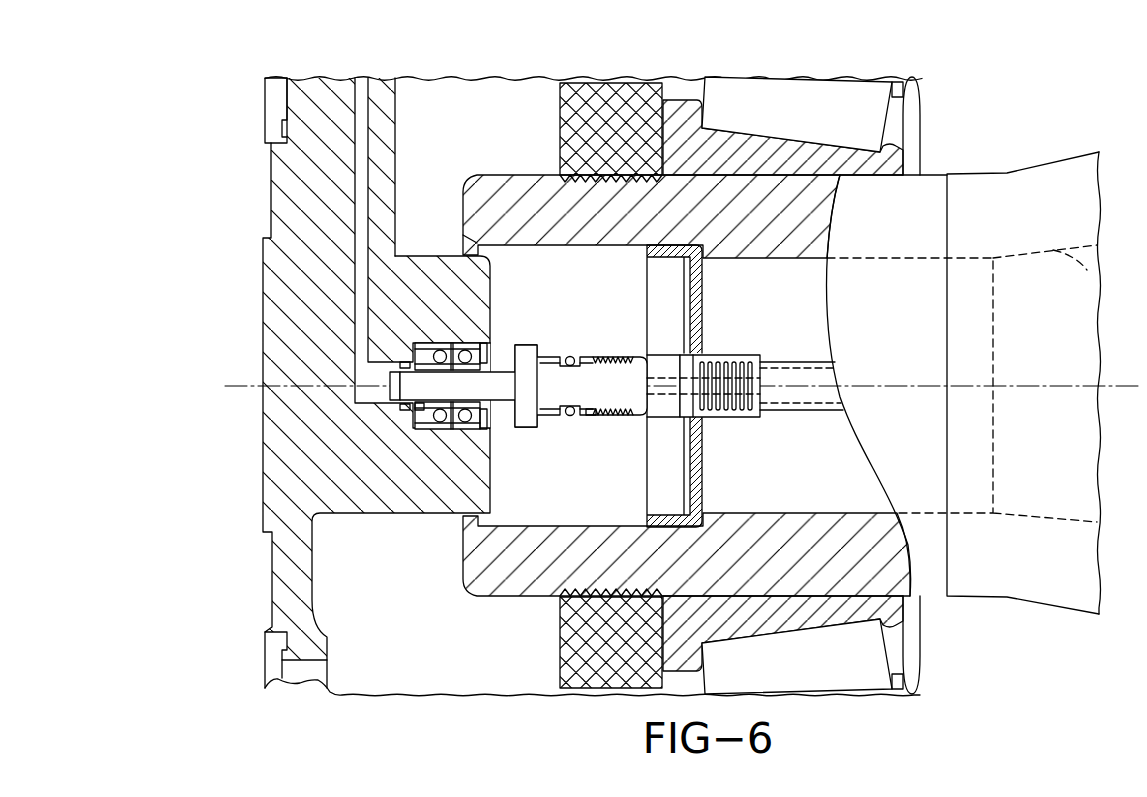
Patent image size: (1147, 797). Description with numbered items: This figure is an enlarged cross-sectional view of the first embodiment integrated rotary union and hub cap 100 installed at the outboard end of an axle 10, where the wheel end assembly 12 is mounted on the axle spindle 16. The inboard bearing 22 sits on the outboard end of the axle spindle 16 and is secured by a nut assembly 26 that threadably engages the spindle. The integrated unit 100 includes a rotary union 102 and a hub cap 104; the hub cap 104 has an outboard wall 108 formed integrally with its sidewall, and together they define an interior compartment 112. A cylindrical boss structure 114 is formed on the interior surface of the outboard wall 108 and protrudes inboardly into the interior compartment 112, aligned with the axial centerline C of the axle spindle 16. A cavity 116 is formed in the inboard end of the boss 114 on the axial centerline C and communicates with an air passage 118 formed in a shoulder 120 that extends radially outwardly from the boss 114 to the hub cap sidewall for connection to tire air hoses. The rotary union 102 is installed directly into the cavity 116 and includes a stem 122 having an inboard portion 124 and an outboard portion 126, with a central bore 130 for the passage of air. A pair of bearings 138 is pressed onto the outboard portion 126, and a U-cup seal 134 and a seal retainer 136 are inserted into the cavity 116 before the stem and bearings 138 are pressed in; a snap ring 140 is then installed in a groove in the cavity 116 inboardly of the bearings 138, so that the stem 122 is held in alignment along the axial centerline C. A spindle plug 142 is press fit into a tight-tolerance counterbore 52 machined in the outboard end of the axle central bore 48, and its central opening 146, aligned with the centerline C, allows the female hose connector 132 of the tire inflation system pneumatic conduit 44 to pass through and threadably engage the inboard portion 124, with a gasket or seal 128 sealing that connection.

The integrated rotary union and hub cap 100 is at (234, 101).
The hub cap 104 is at (265, 282).
The outboard wall 108 is at (276, 355).
The interior compartment 112 is at (490, 110).
The cylindrical boss structure 114 is at (421, 257).
The cavity 116 is at (428, 343).
The air passage 118 is at (358, 134).
The shoulder 120 is at (380, 117).
The stem 122 is at (514, 347).
The inboard portion 124 is at (590, 413).
The outboard portion 126 is at (438, 420).
The gasket or seal 128 is at (571, 357).
The central bore 130 is at (606, 370).
The female hose connector 132 is at (609, 420).
The U-cup seal 134 is at (404, 405).
The seal retainer 136 is at (409, 430).
The bearings 138 is at (466, 420).
The snap ring 140 is at (487, 421).
The spindle plug 142 is at (701, 283).
The central opening 146 is at (706, 345).
The rotary union 102 is at (526, 337).
The counterbore 52 is at (524, 246).
The nut assembly 26 is at (612, 102).
The inboard bearing 22 is at (688, 108).
The wheel end assembly 12 is at (921, 80).
The axle 10 is at (1049, 168).
The axle spindle 16 is at (930, 172).
The tire inflation system pneumatic conduit 44 is at (805, 360).
The axle central bore 48 is at (1090, 266).
The axial centerline C is at (248, 392).